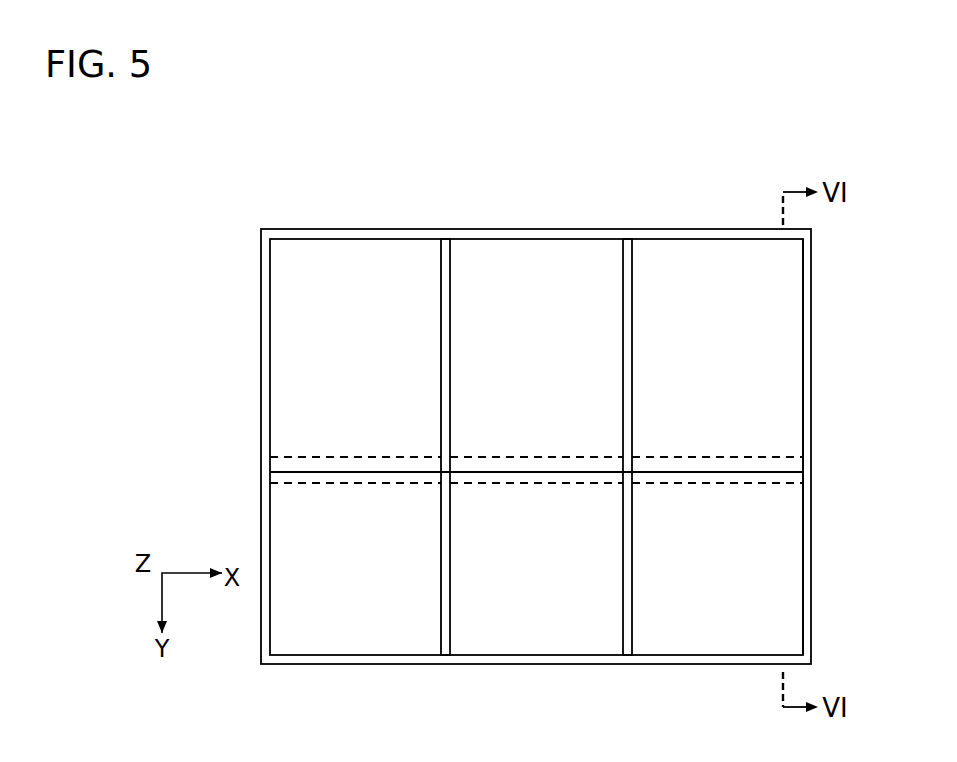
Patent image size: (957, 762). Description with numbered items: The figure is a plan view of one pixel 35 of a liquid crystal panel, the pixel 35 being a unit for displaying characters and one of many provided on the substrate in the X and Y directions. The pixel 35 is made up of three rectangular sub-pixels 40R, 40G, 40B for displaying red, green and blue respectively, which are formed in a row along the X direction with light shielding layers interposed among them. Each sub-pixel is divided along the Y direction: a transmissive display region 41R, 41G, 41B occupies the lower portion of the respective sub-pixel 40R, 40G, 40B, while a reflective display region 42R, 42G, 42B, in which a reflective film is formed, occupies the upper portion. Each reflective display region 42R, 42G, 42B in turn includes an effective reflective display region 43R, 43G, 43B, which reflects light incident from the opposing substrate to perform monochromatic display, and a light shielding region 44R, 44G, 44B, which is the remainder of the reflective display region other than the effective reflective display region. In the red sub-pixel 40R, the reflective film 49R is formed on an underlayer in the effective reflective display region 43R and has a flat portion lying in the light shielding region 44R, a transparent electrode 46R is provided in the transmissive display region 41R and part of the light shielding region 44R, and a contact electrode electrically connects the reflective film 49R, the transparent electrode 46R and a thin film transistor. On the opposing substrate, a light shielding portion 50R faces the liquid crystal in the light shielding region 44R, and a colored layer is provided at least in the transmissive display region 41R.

The pixel 35 is at (283, 52).
The sub-pixel 40G is at (238, 102).
The sub-pixel 40B is at (597, 102).
The sub-pixel 40R is at (797, 102).
The transmissive display region 41G is at (335, 557).
The reflective display region 42G is at (308, 152).
The effective reflective display region 43G is at (354, 292).
The light shielding region 44G is at (422, 455).
The transmissive display region 41B is at (487, 562).
The reflective display region 42B is at (637, 152).
The effective reflective display region 43B is at (542, 292).
The light shielding region 44B is at (583, 458).
The transmissive display region 41R is at (657, 562).
The reflective display region 42R is at (830, 152).
The effective reflective display region 43R is at (727, 293).
The light shielding region 44R is at (725, 453).
The reflective film 49R is at (792, 356).
The light shielding portion 50R is at (820, 455).
The transparent electrode 46R is at (788, 585).